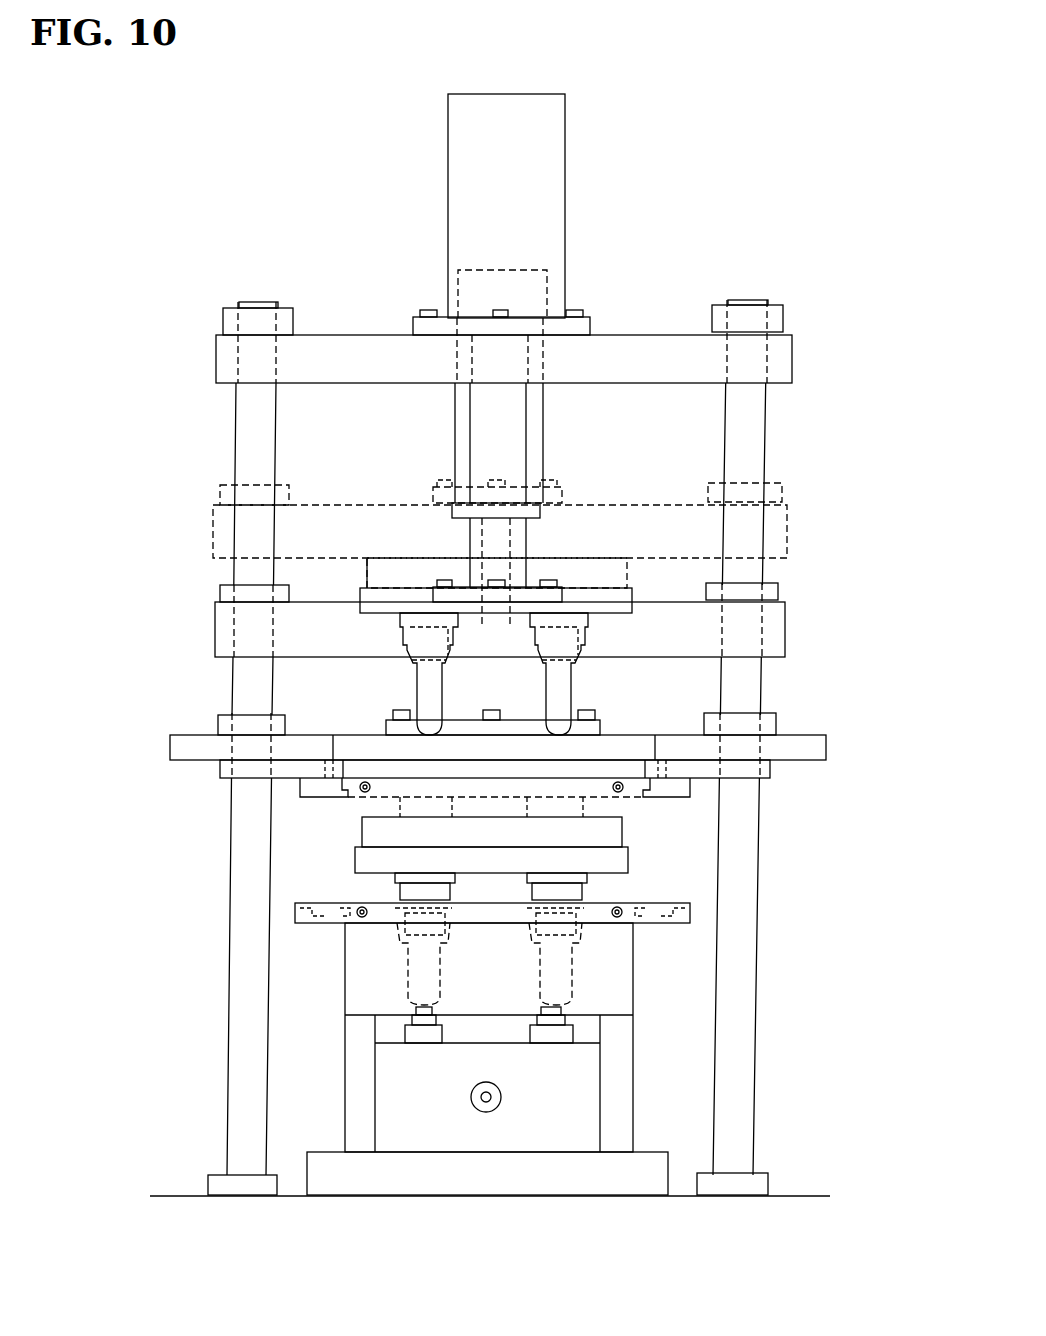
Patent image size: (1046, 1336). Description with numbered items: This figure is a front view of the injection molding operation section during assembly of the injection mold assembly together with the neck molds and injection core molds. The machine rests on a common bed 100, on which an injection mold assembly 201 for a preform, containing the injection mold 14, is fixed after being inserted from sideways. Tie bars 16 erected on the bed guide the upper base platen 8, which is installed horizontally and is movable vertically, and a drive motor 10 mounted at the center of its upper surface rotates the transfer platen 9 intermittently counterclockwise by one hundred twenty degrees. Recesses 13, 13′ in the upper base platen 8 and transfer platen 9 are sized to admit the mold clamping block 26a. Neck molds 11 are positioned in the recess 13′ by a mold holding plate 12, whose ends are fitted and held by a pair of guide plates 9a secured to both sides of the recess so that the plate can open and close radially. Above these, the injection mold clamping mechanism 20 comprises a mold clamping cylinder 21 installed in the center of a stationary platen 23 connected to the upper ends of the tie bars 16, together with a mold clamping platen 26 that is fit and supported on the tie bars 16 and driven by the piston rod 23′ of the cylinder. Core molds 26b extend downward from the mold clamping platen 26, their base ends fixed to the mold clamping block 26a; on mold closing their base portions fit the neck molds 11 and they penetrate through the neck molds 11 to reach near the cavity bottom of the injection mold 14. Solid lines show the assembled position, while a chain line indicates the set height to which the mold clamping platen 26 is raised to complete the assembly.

The upper base platen 8 is at (192, 740).
The transfer platen 9 is at (283, 775).
The guide plates 9a is at (700, 790).
The drive motor 10 is at (515, 692).
The neck molds 11 is at (580, 805).
The mold holding plate 12 is at (345, 795).
The recess 13 is at (372, 742).
The recess 13′ is at (622, 768).
The injection mold 14 is at (613, 950).
The tie bars 16 is at (243, 1015).
The injection mold clamping mechanism 20 is at (192, 362).
The mold clamping cylinder 21 is at (480, 157).
The stationary platen 23 is at (348, 345).
The piston rod 23′ is at (490, 421).
The mold clamping platen 26 is at (290, 528).
The mold clamping block 26a is at (615, 572).
The core molds 26b is at (432, 683).
The bed 100 is at (178, 1195).
The injection mold assembly 201 is at (652, 1050).